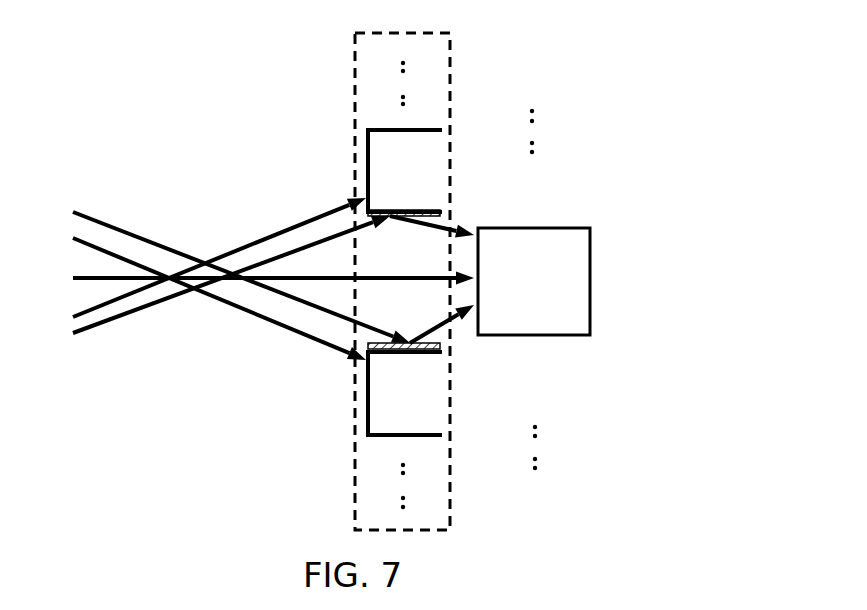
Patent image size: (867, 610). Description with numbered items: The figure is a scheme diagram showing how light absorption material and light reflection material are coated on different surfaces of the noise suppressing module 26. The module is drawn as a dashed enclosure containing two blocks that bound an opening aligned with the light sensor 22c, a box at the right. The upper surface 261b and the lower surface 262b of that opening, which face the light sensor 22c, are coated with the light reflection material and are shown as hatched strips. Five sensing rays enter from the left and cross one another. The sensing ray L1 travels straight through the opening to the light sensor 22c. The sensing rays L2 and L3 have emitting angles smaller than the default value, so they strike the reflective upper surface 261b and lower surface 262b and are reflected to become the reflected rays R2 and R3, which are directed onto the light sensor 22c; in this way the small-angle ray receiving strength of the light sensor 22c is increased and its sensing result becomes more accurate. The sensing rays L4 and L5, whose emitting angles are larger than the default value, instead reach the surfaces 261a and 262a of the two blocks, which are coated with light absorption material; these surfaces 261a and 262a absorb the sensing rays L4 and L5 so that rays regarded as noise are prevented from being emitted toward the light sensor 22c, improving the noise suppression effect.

The noise suppressing module 26 is at (355, 67).
The surface 261a is at (368, 166).
The upper surface 261b is at (440, 213).
The surface 262a is at (368, 407).
The lower surface 262b is at (440, 350).
The light sensor 22c is at (587, 297).
The sensing ray L1 is at (260, 278).
The sensing ray L2 is at (206, 264).
The sensing ray L3 is at (206, 292).
The sensing ray L4 is at (218, 286).
The sensing ray L5 is at (228, 269).
The reflected ray R2 is at (432, 235).
The reflected ray R3 is at (442, 324).